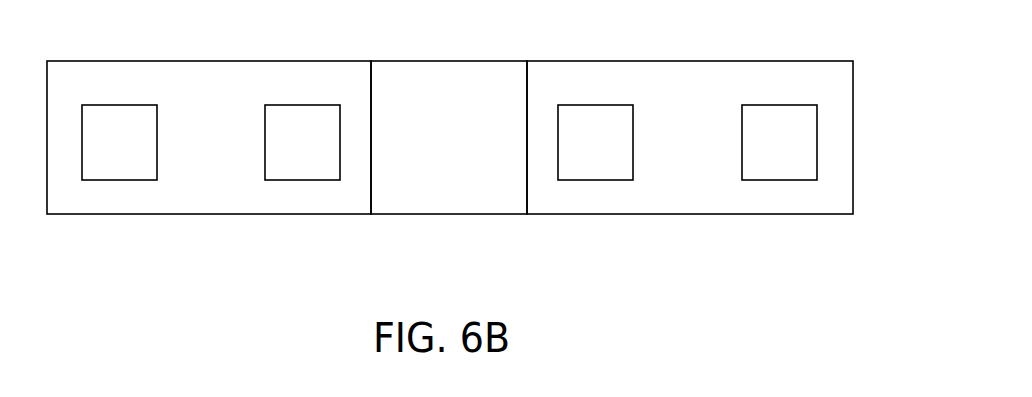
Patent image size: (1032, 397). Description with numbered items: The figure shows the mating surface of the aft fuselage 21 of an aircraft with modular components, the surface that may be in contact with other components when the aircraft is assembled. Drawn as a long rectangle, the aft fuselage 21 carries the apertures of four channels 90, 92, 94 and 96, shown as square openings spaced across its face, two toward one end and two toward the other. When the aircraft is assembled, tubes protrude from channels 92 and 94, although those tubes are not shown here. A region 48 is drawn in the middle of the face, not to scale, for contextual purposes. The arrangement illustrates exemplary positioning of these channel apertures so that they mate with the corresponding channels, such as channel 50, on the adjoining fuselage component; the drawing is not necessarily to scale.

The aft fuselage 21 is at (203, 78).
The region 48 is at (477, 84).
The channel 50 is at (690, 137).
The channel 90 is at (130, 157).
The channel 92 is at (318, 158).
The channel 94 is at (606, 157).
The channel 96 is at (793, 157).